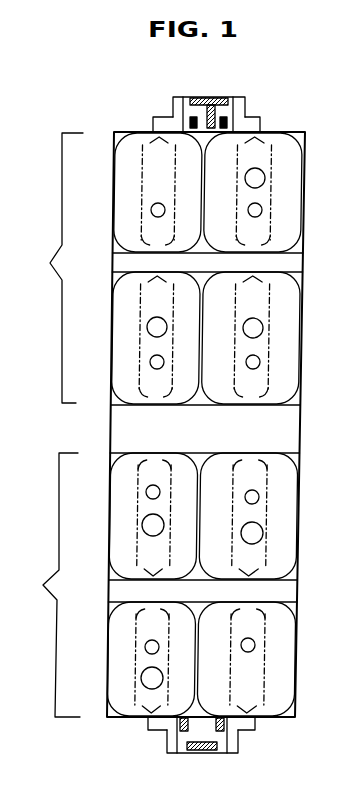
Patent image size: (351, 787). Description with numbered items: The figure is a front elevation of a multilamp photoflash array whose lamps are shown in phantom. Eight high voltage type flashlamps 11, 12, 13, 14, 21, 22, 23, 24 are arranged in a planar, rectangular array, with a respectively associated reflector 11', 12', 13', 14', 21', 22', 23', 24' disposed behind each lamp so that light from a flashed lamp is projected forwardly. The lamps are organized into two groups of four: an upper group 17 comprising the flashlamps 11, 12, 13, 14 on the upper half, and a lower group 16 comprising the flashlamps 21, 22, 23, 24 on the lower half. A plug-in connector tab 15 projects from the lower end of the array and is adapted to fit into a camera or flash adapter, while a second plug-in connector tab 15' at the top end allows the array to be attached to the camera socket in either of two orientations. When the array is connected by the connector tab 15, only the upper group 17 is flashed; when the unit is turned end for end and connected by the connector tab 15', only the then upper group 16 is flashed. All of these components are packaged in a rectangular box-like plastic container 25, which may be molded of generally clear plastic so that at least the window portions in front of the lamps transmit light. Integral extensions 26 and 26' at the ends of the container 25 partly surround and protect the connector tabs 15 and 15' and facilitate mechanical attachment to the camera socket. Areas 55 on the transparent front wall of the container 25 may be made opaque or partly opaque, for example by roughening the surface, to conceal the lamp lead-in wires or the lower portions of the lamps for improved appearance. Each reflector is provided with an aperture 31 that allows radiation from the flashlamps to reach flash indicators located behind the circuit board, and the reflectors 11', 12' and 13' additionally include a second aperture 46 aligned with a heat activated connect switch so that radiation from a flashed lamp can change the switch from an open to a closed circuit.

The plastic container 25 is at (304, 138).
The areas 55 is at (288, 265).
The second plug-in connector tab 15' is at (221, 97).
The integral extension 26' is at (224, 110).
The plug-in connector tab 15 is at (220, 742).
The integral extension 26 is at (193, 742).
The reflector 14' is at (138, 192).
The flashlamp 14 is at (125, 191).
The reflector 13' is at (272, 192).
The flashlamp 13 is at (288, 191).
The reflector 11' is at (137, 338).
The flashlamp 11 is at (124, 336).
The reflector 12' is at (270, 338).
The flashlamp 12 is at (284, 336).
The reflector 22' is at (133, 516).
The flashlamp 22 is at (119, 518).
The reflector 21' is at (267, 516).
The flashlamp 21 is at (281, 518).
The reflector 23' is at (133, 659).
The flashlamp 23 is at (118, 661).
The reflector 24' is at (266, 659).
The flashlamp 24 is at (280, 661).
The apertures 31 is at (151, 210).
The second aperture 46 is at (265, 178).
The upper group 17 is at (50, 268).
The lower group 16 is at (47, 585).